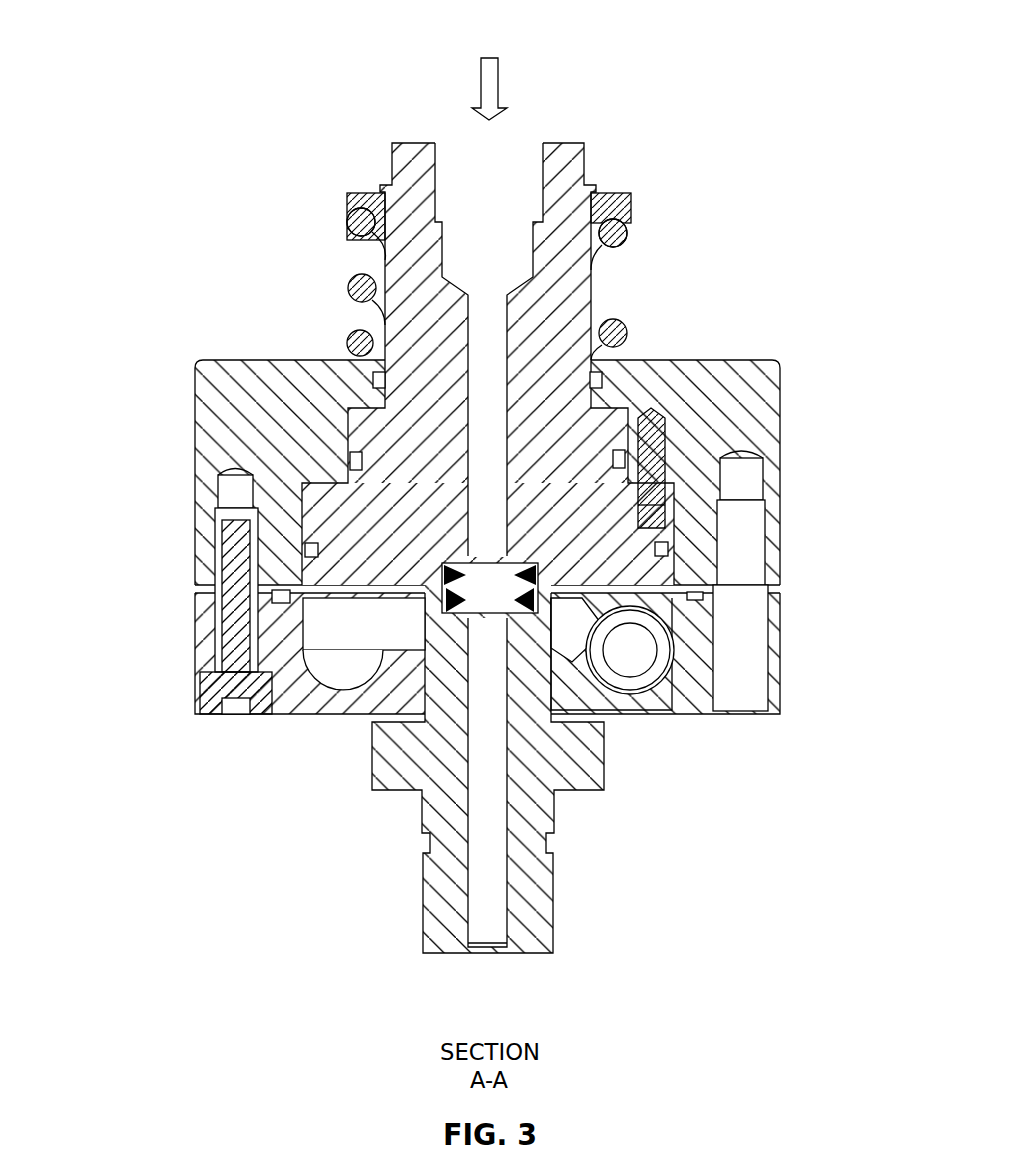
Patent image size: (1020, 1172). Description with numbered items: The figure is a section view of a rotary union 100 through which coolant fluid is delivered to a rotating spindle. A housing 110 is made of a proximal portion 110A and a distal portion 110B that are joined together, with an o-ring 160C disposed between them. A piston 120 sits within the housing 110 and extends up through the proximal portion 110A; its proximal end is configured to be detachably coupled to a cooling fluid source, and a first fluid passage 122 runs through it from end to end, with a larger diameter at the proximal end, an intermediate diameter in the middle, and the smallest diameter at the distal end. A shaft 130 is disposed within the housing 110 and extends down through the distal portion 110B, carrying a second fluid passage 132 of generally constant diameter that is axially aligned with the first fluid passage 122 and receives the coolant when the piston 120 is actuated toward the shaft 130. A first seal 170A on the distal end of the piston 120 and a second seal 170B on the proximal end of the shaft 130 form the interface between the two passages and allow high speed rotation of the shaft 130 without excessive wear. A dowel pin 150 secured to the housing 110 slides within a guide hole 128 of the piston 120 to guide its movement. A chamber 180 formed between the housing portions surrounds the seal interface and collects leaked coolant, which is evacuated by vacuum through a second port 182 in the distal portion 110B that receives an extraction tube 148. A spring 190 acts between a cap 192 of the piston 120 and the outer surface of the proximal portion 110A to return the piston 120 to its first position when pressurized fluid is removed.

The rotary union 100 is at (482, 478).
The housing 110 is at (413, 507).
The proximal portion of the housing 110A is at (192, 430).
The distal portion of the housing 110B is at (197, 652).
The piston 120 is at (592, 278).
The first fluid passage 122 is at (488, 396).
The guide hole 128 is at (650, 523).
The shaft 130 is at (420, 892).
The second fluid passage 132 is at (490, 788).
The extraction tube 148 is at (749, 683).
The dowel pin 150 is at (665, 420).
The o-ring 160C is at (270, 598).
The first seal 170A is at (540, 564).
The second seal 170B is at (541, 619).
The chamber 180 is at (343, 632).
The second port 182 is at (672, 669).
The spring 190 is at (350, 282).
The cap 192 is at (632, 202).